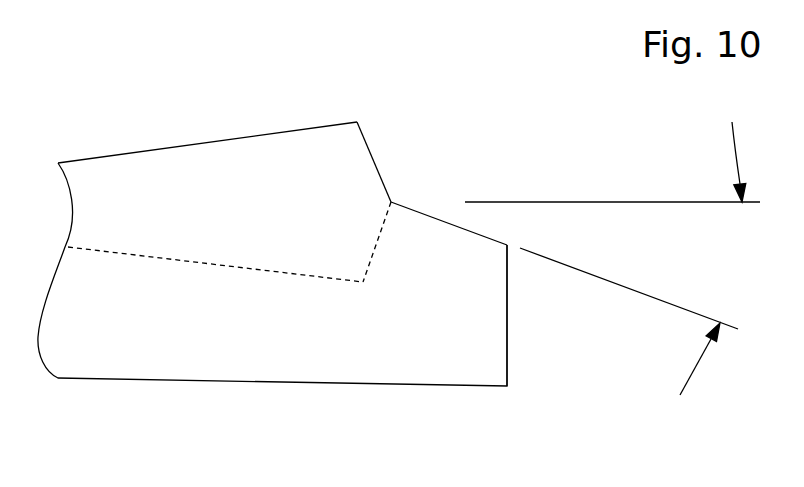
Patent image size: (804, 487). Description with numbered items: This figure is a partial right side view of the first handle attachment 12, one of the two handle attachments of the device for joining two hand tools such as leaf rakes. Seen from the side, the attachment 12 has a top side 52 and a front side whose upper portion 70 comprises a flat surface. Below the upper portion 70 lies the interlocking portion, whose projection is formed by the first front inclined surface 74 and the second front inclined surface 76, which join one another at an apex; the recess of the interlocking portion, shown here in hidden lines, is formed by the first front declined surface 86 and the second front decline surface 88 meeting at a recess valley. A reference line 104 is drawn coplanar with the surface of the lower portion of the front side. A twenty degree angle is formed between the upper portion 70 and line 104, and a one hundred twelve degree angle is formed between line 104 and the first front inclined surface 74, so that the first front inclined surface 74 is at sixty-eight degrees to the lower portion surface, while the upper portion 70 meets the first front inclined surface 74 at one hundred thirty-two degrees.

The first handle attachment 12 is at (210, 348).
The top side 52 is at (507, 333).
The upper portion 70 is at (417, 210).
The first front inclined surface 74 is at (368, 152).
The second front inclined surface 76 is at (105, 153).
The first front declined surface 86 is at (377, 247).
The second front decline surface 88 is at (297, 275).
The line 104 is at (617, 200).